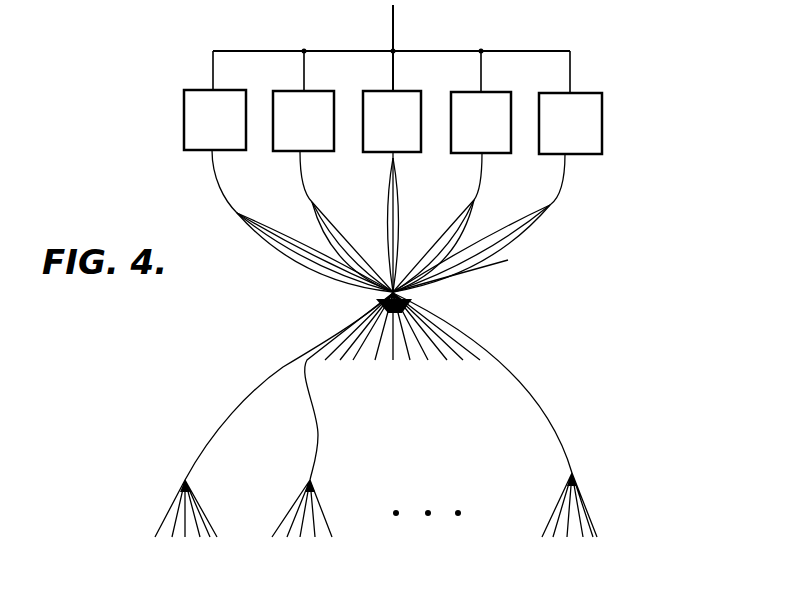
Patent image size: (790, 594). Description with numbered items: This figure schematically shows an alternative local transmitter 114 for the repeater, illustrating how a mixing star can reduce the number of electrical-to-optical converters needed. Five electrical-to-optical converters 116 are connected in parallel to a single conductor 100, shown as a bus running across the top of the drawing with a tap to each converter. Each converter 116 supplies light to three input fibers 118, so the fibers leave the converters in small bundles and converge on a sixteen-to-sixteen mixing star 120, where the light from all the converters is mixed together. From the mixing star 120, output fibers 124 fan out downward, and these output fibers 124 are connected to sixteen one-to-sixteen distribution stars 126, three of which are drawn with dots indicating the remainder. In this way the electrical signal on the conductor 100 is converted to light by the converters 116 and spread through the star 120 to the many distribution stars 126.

The conductor 100 is at (393, 28).
The local transmitter 114 is at (624, 70).
The electrical-to-optical converters 116 is at (184, 118).
The input fibers 118 is at (312, 200).
The mixing star 120 is at (466, 305).
The output fibers 124 is at (283, 367).
The distribution stars 126 is at (163, 482).